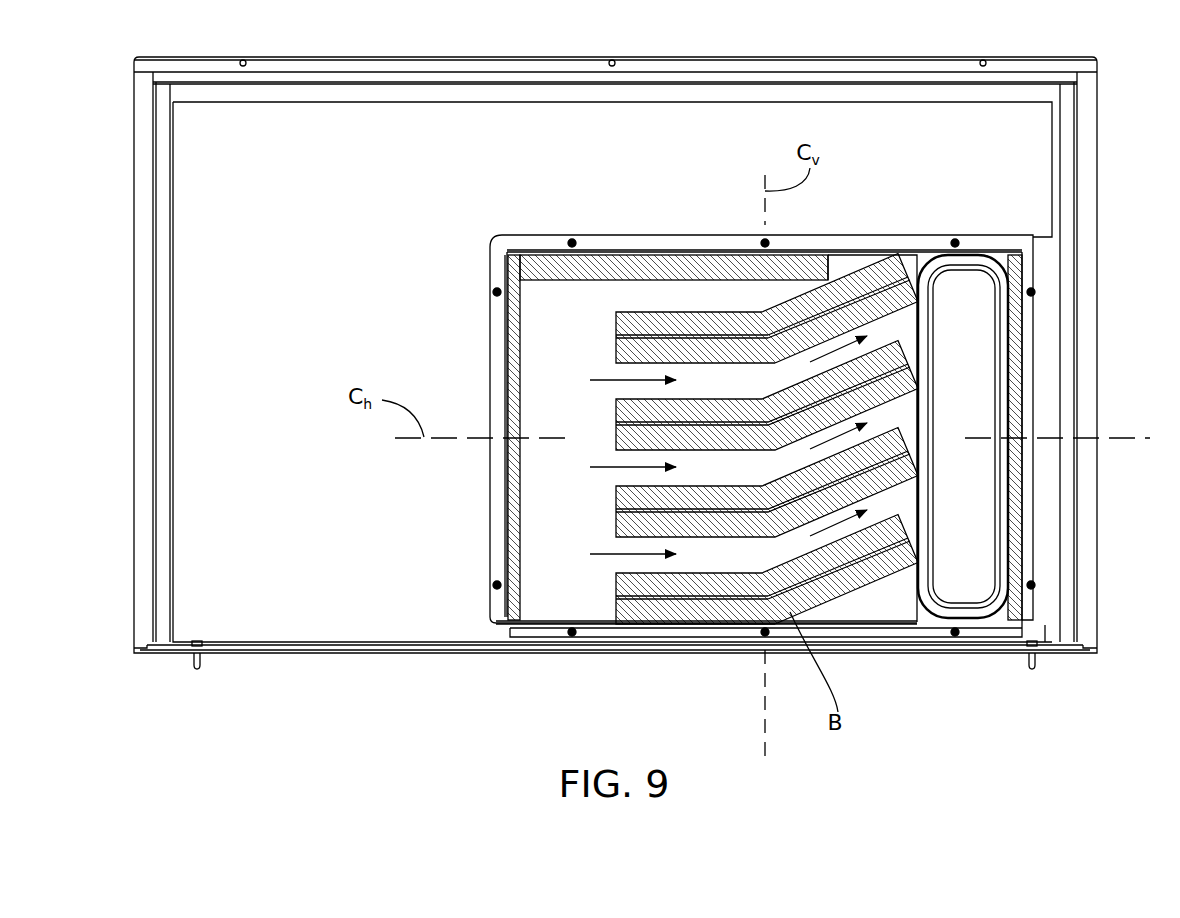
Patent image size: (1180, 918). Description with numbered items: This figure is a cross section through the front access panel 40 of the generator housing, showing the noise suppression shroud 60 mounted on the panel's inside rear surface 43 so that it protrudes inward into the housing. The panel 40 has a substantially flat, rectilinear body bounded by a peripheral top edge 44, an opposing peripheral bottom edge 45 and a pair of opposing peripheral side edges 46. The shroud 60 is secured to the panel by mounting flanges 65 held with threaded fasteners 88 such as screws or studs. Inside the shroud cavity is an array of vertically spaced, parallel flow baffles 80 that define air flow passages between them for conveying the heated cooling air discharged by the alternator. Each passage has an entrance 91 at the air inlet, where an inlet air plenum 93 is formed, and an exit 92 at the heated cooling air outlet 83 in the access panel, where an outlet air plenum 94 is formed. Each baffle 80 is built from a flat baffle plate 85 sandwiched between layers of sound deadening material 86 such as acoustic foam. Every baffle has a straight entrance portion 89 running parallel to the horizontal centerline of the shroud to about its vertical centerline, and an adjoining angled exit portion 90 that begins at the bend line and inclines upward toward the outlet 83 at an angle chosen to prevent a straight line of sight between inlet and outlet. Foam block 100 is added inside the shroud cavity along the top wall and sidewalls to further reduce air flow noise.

The access panel 40 is at (149, 46).
The peripheral top edge 44 is at (352, 57).
The peripheral side edges 46 is at (136, 216).
The peripheral bottom edge 45 is at (405, 655).
The rear surface 43 is at (1045, 642).
The noise suppression shroud 60 is at (530, 228).
The mounting flanges 65 is at (1037, 267).
The flow baffles 80 is at (700, 292).
The heated cooling air outlet 83 is at (993, 328).
The baffle plate 85 is at (870, 553).
The sound deadening material 86 is at (717, 615).
The threaded fasteners 88 is at (1034, 292).
The straight entrance portion 89 is at (658, 335).
The angled exit portion 90 is at (878, 276).
The entrance 91 is at (600, 580).
The exit 92 is at (903, 318).
The inlet air plenum 93 is at (542, 590).
The outlet air plenum 94 is at (978, 549).
The foam block 100 is at (582, 273).